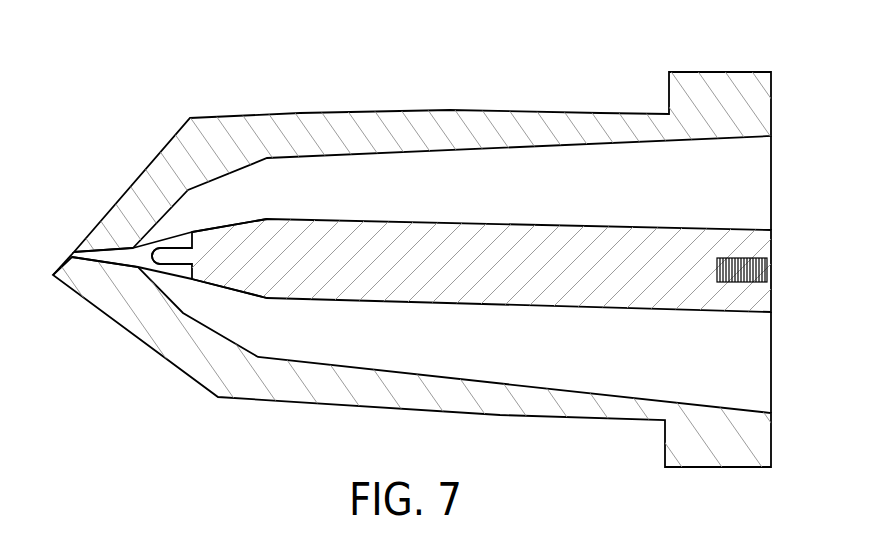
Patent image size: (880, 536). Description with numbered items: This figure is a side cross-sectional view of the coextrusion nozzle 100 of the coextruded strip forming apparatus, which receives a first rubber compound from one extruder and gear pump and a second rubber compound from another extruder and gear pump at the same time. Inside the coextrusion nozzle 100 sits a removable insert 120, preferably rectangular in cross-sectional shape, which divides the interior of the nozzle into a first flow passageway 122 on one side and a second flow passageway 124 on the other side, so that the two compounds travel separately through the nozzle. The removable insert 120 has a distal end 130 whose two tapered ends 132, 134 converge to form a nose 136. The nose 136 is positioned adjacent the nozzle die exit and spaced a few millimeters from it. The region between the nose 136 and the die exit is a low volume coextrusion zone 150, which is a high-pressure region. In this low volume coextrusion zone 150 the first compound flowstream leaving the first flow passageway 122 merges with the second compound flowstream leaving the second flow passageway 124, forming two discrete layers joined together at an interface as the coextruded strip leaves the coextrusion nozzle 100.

The coextrusion nozzle 100 is at (440, 238).
The removable insert 120 is at (513, 219).
The first flow passageway 122 is at (757, 187).
The second flow passageway 124 is at (757, 362).
The distal end 130 is at (440, 265).
The tapered end 132 is at (245, 225).
The tapered end 134 is at (245, 293).
The nose 136 is at (178, 249).
The low volume coextrusion zone 150 is at (137, 264).